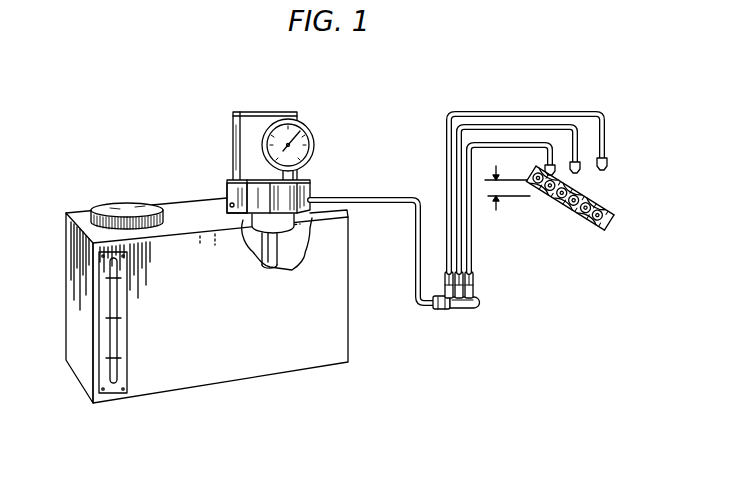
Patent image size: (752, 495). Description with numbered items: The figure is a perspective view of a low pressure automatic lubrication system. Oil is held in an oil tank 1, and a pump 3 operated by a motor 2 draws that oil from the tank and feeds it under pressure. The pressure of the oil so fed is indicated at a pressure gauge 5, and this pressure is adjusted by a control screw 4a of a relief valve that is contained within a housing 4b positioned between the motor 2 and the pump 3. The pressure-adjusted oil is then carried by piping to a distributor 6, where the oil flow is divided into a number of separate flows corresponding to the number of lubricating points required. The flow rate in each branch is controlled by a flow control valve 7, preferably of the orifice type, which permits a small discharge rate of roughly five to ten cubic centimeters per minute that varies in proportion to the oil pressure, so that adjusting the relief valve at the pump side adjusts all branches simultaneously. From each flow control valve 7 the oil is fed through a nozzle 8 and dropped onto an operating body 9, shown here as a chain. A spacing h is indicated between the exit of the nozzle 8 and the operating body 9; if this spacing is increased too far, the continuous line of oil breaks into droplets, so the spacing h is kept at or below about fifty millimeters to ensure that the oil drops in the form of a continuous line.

The oil tank 1 is at (335, 330).
The motor 2 is at (233, 123).
The pump 3 is at (255, 248).
The control screw 4a is at (225, 198).
The housing 4b is at (223, 187).
The pressure gauge 5 is at (303, 125).
The distributor 6 is at (462, 308).
The flow control valve 7 is at (472, 282).
The nozzle 8 is at (608, 168).
The operating body 9 is at (603, 210).
The spacing h is at (504, 188).